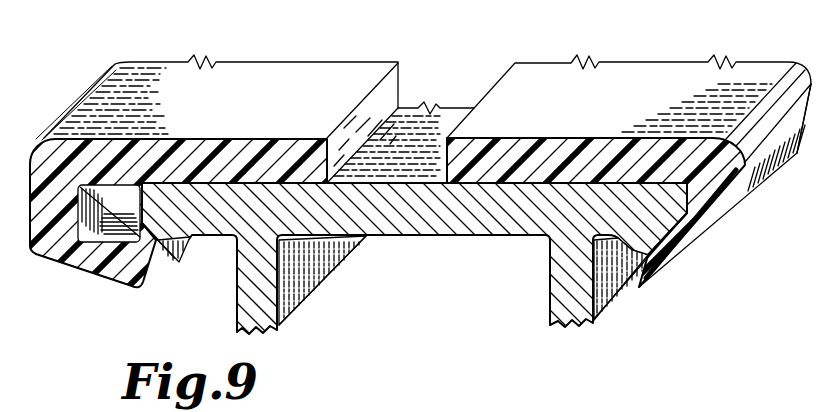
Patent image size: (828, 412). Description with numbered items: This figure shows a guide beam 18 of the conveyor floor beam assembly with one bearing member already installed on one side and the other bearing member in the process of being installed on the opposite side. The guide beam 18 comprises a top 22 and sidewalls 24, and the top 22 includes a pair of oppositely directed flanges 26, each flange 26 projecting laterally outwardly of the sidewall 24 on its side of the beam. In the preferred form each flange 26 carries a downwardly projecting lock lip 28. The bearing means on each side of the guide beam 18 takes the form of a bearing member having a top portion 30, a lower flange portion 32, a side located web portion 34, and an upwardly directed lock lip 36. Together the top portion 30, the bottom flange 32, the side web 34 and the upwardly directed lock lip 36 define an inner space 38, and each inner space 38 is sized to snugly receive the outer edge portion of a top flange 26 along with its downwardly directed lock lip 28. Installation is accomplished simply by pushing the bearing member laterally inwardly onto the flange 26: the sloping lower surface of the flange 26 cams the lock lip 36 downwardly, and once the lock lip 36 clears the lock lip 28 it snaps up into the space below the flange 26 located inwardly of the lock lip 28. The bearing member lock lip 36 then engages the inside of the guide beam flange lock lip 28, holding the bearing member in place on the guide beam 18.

The guide beam 18 is at (424, 88).
The top 22 is at (444, 127).
The sidewall 24 is at (303, 292).
The flange 26 is at (168, 205).
The lock lip 28 is at (194, 252).
The top portion 30 is at (267, 74).
The lower flange portion 32 is at (147, 235).
The side located web portion 34 is at (56, 215).
The upwardly directed lock lip 36 is at (162, 244).
The inner space 38 is at (108, 243).